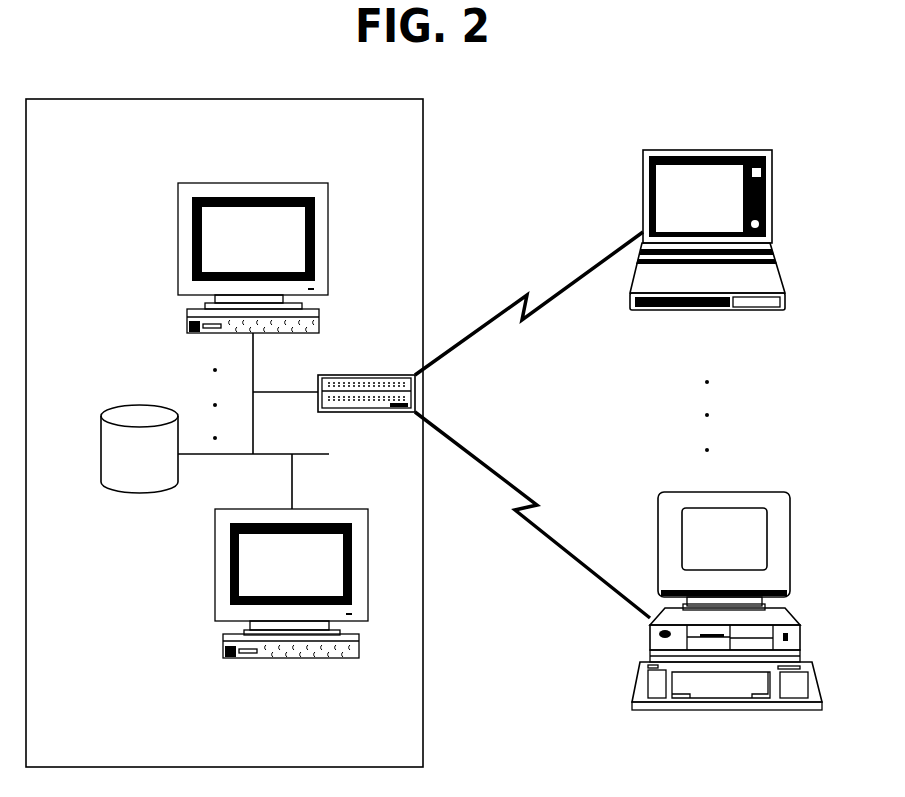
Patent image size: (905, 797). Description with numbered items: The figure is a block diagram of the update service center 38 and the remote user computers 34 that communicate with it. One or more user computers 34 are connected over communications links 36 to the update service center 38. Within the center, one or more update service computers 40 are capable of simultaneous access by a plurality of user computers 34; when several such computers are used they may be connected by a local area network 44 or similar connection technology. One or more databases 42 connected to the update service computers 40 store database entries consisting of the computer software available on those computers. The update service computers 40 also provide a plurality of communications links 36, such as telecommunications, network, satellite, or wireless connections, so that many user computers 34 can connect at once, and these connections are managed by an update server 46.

The user computer 34 is at (707, 150).
The communications link 36 is at (518, 297).
The update service center 38 is at (423, 100).
The update service computer 40 is at (328, 188).
The database 42 is at (139, 496).
The local area network 44 is at (253, 381).
The update server 46 is at (330, 375).